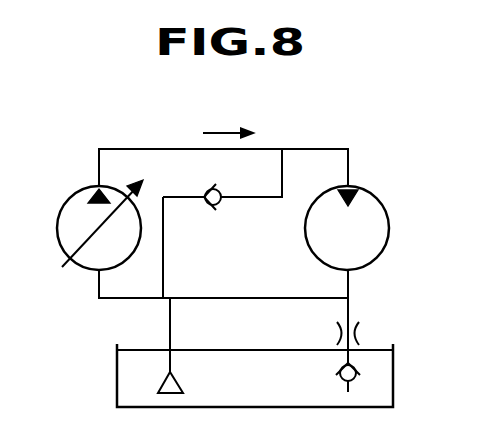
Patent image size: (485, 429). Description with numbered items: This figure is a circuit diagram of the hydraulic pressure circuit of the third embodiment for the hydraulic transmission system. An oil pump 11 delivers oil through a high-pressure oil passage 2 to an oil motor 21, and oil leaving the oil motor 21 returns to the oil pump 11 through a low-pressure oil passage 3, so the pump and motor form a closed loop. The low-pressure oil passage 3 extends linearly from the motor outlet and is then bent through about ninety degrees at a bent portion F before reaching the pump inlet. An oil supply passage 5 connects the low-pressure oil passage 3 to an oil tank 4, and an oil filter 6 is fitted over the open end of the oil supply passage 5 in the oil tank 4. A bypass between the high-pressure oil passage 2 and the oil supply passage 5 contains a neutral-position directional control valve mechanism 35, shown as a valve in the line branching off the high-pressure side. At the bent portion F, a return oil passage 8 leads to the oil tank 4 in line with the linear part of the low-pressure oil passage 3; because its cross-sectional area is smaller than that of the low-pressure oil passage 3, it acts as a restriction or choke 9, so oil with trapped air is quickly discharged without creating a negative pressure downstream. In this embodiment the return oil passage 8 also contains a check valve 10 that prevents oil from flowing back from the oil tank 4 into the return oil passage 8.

The high-pressure oil passage 2 is at (302, 148).
The low-pressure oil passage 3 is at (230, 298).
The oil tank 4 is at (397, 379).
The oil supply passage 5 is at (170, 320).
The oil filter 6 is at (178, 380).
The return oil passage 8 is at (350, 303).
The restriction or choke 9 is at (336, 333).
The check valve 10 is at (340, 373).
The oil pump 11 is at (59, 220).
The oil motor 21 is at (391, 236).
The neutral-position directional control valve mechanism 35 is at (203, 182).
The bent portion F is at (348, 297).